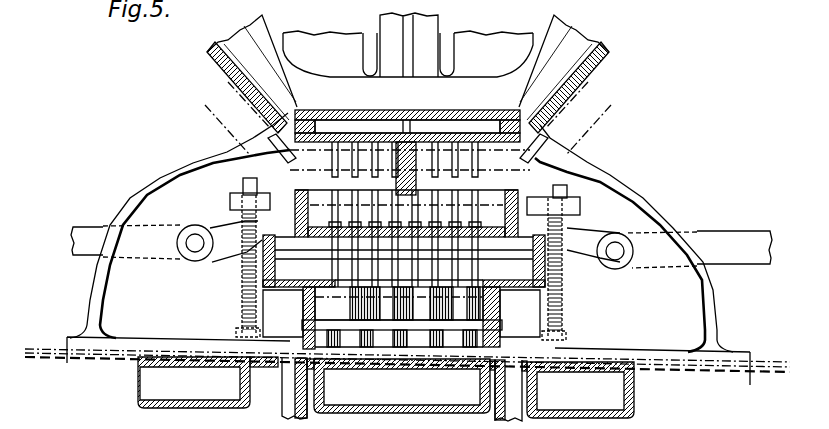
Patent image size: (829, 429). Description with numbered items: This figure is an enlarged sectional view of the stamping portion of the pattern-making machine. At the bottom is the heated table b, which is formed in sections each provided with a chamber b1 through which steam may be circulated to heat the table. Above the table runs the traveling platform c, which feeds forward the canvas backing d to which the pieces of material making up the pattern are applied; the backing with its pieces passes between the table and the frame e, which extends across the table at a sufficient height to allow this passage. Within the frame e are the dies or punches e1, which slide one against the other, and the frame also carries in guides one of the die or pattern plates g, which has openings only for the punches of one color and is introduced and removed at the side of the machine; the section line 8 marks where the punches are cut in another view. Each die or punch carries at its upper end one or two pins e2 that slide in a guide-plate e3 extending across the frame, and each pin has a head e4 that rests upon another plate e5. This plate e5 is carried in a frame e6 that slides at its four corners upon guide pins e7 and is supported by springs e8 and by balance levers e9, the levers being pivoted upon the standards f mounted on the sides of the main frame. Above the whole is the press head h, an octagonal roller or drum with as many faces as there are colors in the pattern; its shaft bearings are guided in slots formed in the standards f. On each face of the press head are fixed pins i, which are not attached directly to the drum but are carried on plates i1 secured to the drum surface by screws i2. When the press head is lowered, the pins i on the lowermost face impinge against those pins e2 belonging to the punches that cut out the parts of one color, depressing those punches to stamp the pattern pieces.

The press head h is at (408, 73).
The pins i is at (456, 180).
The plates i1 is at (408, 155).
The screws i2 is at (503, 143).
The frame e is at (401, 318).
The dies or punches e1 is at (399, 303).
The pins e2 is at (455, 252).
The guide-plate e3 is at (497, 282).
The head e4 is at (470, 226).
The plate e5 is at (333, 228).
The frame e6 is at (580, 206).
The guide pins e7 is at (566, 186).
The springs e8 is at (411, 229).
The balance levers e9 is at (701, 238).
The standards f is at (712, 289).
The section line 8 is at (565, 283).
The table b is at (630, 372).
The chamber b1 is at (386, 387).
The die or pattern plate g is at (392, 347).
The traveling platform c is at (703, 370).
The canvas backing d is at (113, 353).